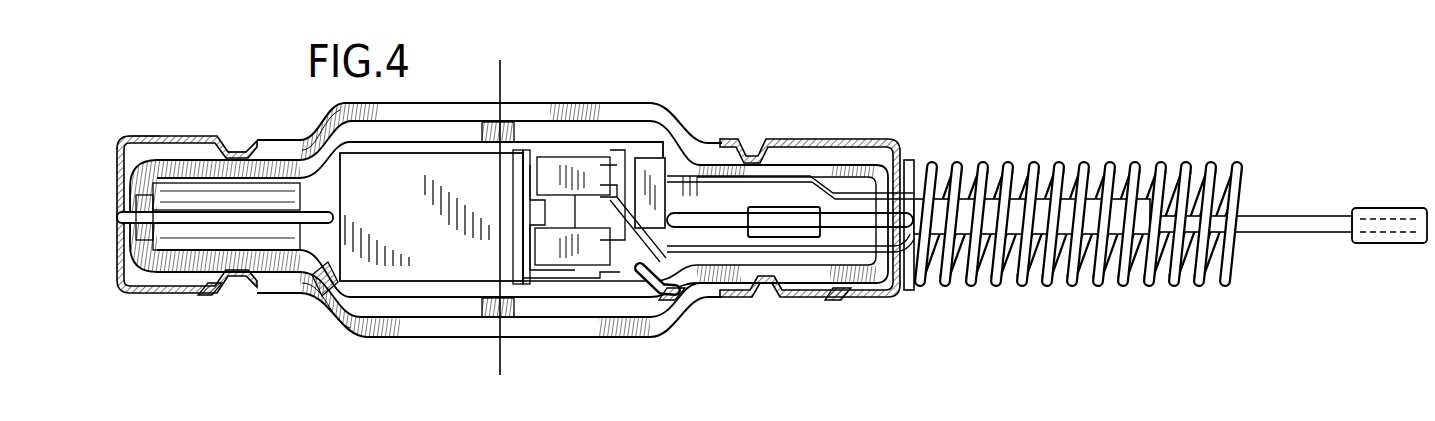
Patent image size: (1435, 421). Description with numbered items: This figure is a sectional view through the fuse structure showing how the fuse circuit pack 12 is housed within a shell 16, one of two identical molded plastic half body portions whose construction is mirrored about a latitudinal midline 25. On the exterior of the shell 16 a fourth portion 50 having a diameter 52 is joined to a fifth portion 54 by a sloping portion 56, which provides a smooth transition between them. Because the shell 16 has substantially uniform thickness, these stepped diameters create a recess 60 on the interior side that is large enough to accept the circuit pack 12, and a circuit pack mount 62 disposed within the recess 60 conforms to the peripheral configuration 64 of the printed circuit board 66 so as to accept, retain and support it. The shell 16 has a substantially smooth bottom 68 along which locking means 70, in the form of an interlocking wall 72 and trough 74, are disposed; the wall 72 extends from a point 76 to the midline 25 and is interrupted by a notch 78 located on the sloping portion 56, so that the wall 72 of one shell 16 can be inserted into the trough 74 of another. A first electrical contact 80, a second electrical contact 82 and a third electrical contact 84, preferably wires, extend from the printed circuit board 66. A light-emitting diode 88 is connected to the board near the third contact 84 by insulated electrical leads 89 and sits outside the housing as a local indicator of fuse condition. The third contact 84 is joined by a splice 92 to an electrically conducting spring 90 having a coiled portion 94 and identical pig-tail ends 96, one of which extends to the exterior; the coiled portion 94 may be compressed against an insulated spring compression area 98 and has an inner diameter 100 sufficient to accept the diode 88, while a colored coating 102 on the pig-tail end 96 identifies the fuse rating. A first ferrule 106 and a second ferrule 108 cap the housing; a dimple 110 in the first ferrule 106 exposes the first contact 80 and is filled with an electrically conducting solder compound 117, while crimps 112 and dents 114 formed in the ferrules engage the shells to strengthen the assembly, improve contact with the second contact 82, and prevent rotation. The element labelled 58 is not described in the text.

The fuse circuit pack 12 is at (436, 286).
The shell 16 is at (623, 341).
The latitudinal midline 25 is at (501, 365).
The fourth portion 50 is at (278, 296).
The diameter 52 is at (270, 145).
The fifth portion 54 is at (573, 103).
The sloping portion 56 is at (320, 140).
The intermediate shell 58 is at (580, 305).
The recess 60 is at (462, 299).
The circuit pack mount 62 is at (322, 265).
The peripheral configuration 64 is at (668, 162).
The printed circuit board 66 is at (563, 281).
The bottom 68 is at (353, 107).
The locking means 70 is at (483, 320).
The interlocking wall 72 is at (443, 132).
The trough 74 is at (623, 121).
The point 76 is at (490, 121).
The notch 78 is at (713, 273).
The first electrical contact 80 is at (247, 222).
The second electrical contact 82 is at (667, 300).
The third electrical contact 84 is at (735, 210).
The light-emitting diode 88 is at (1163, 284).
The insulated electrical leads 89 is at (692, 303).
The electrically conducting spring 90 is at (1222, 163).
The splice 92 is at (803, 207).
The coiled portion 94 is at (1047, 284).
The pig-tail end 96 is at (905, 190).
The insulated spring compression area 98 is at (935, 165).
The inner diameter 100 is at (1080, 281).
The colored coating 102 is at (1392, 209).
The first ferrule 106 is at (134, 292).
The second ferrule 108 is at (877, 300).
The dimple 110 is at (125, 205).
The crimps 112 is at (234, 300).
The dents 114 is at (222, 294).
The electrically conducting solder compound 117 is at (116, 230).